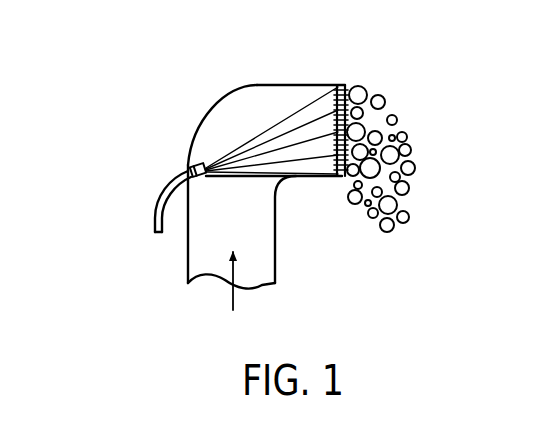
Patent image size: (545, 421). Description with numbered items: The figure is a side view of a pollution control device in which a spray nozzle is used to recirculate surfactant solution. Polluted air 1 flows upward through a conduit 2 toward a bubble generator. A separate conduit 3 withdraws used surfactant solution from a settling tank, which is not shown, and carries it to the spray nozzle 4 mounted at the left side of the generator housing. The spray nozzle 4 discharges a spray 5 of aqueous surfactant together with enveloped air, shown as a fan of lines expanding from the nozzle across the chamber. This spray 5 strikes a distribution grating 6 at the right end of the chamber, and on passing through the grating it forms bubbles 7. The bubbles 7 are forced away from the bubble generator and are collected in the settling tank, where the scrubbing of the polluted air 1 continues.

The polluted air 1 is at (233, 298).
The conduit 2 is at (275, 237).
The conduit 3 is at (152, 218).
The spray nozzle 4 is at (192, 162).
The spray 5 is at (267, 109).
The distribution grating 6 is at (346, 83).
The bubbles 7 is at (424, 156).